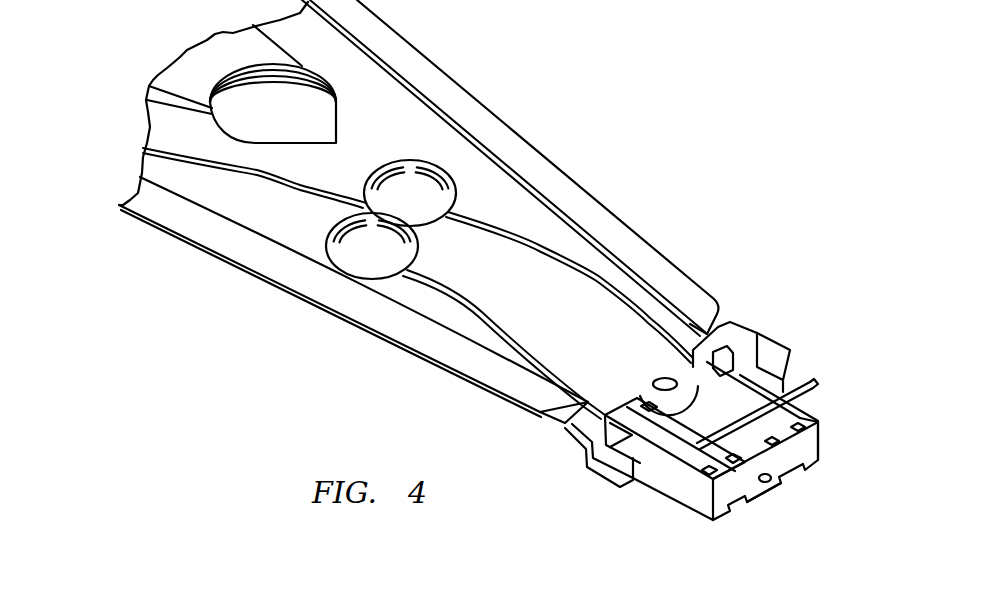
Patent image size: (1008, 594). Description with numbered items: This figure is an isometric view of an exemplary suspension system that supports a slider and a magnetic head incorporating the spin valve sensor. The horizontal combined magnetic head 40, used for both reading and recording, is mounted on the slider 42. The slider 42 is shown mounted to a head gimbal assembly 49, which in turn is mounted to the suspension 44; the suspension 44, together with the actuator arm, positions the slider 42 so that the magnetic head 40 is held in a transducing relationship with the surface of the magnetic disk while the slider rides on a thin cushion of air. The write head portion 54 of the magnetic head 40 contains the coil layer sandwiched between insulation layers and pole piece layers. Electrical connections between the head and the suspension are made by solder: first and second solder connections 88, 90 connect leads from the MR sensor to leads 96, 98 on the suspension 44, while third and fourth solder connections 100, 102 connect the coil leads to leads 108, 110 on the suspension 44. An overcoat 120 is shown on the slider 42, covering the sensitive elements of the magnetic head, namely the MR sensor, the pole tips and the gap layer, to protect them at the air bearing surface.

The horizontal combined magnetic head 40 is at (770, 490).
The slider 42 is at (637, 489).
The suspension 44 is at (598, 194).
The head gimbal assembly (HGA) 49 is at (777, 348).
The write head portion 54 is at (693, 411).
The first solder connection 88 is at (697, 473).
The second solder connection 90 is at (800, 415).
The lead on the suspension 96 is at (450, 300).
The lead on the suspension 98 is at (625, 282).
The third solder connection 100 is at (742, 480).
The fourth solder connection 102 is at (815, 462).
The lead on the suspension 108 is at (470, 303).
The lead on the suspension 110 is at (543, 249).
The overcoat 120 is at (668, 505).